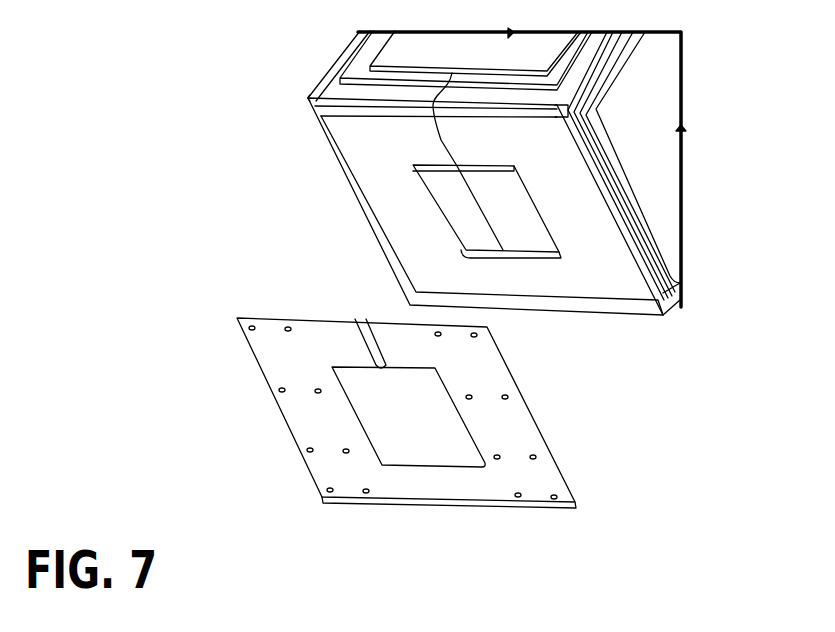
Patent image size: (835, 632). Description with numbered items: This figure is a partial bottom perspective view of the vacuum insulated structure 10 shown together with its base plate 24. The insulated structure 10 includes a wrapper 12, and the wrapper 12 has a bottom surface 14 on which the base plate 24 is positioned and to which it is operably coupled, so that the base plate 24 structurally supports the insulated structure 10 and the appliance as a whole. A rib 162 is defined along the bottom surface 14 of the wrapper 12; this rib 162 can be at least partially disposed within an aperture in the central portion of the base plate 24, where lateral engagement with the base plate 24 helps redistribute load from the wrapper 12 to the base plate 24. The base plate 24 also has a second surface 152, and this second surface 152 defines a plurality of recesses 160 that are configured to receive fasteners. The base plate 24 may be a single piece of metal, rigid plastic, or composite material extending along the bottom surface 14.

The vacuum insulated structure 10 is at (240, 80).
The wrapper 12 is at (648, 82).
The bottom surface 14 is at (355, 149).
The rib 162 is at (443, 139).
The base plate 24 is at (286, 318).
The recesses 160 is at (250, 332).
The second surface 152 is at (498, 423).